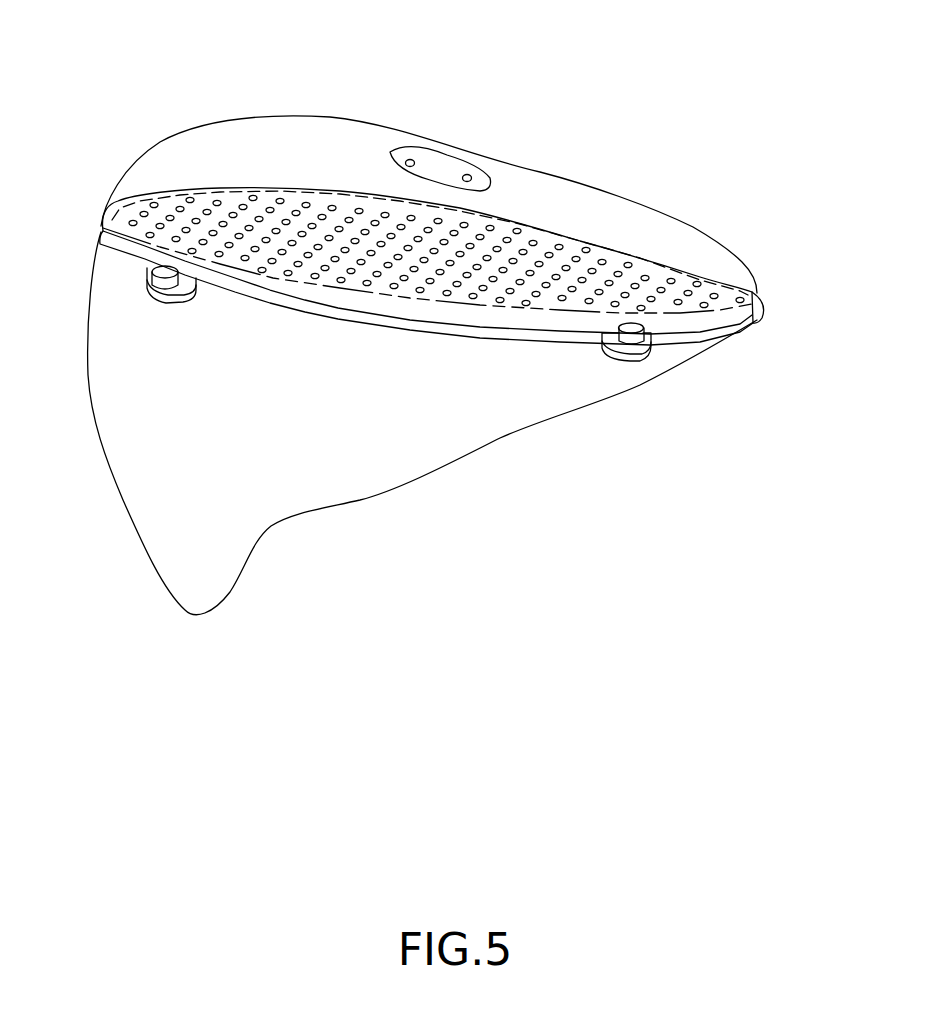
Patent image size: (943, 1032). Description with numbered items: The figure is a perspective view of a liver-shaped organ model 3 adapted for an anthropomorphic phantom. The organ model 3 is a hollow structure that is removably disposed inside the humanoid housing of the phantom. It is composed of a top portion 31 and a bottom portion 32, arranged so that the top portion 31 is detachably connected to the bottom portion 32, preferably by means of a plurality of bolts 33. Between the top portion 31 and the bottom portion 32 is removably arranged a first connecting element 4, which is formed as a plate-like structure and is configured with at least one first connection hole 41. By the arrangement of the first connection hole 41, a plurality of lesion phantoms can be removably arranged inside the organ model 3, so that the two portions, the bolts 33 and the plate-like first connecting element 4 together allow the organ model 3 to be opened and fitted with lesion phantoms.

The organ model 3 is at (524, 101).
The top portion 31 is at (307, 148).
The bottom portion 32 is at (427, 477).
The bolts 33 is at (156, 269).
The first connecting element 4 is at (723, 276).
The first connection hole 41 is at (680, 301).